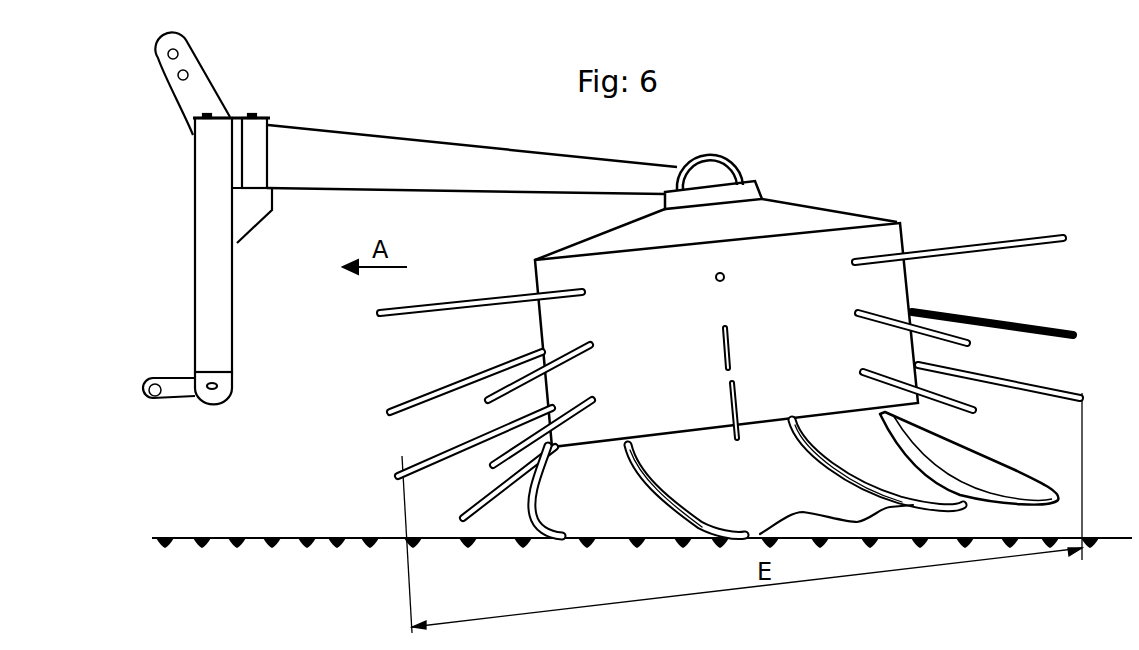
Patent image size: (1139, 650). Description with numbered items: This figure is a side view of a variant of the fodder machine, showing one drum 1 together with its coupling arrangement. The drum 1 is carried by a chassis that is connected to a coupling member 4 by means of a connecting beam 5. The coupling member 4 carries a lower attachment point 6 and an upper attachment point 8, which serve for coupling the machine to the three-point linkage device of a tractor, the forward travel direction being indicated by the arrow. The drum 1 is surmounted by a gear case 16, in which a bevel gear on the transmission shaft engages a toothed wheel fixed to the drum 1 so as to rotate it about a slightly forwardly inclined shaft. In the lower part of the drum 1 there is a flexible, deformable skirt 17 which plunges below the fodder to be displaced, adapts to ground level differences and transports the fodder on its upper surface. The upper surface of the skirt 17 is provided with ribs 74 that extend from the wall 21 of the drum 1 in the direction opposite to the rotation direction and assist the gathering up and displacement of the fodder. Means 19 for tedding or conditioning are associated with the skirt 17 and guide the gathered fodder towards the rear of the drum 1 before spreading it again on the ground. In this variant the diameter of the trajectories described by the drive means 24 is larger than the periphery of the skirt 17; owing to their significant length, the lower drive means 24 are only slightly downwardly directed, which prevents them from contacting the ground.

The drum 1 is at (762, 300).
The coupling member 4 is at (222, 302).
The connecting beam 5 is at (480, 157).
The lower attachment point 6 is at (158, 400).
The upper attachment point 8 is at (187, 53).
The gear case 16 is at (750, 190).
The flexible deformable skirt 17 is at (1010, 477).
The tedding or conditioning means 19 is at (442, 450).
The drum wall 21 is at (892, 298).
The drive means 24 is at (1033, 247).
The ribs 74 is at (830, 478).